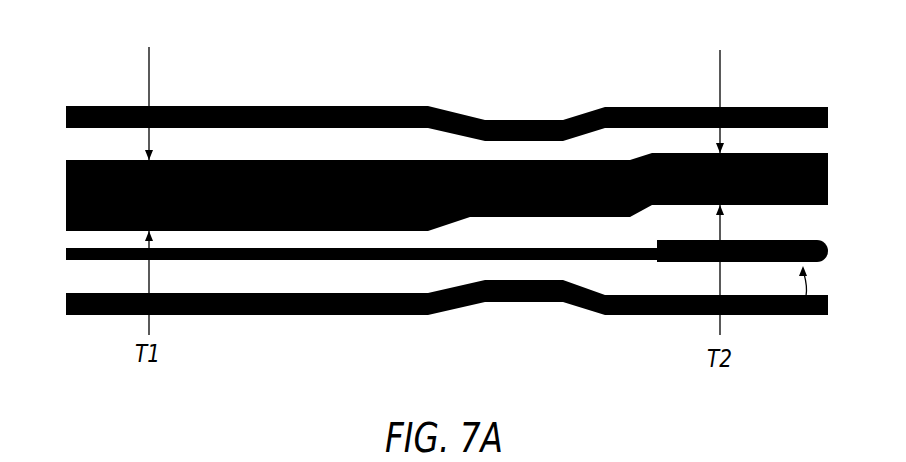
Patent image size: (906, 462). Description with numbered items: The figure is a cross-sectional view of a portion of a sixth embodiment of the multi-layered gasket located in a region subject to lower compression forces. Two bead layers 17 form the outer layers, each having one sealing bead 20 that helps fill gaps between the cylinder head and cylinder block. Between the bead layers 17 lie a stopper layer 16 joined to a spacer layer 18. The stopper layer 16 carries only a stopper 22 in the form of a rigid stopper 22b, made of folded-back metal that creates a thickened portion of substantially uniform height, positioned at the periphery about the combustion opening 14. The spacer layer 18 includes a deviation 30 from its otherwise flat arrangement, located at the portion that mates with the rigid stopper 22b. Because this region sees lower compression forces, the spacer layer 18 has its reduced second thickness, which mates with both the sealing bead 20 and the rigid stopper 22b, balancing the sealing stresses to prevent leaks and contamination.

The combustion opening 14 is at (859, 165).
The stopper layer 16 is at (66, 256).
The bead layer 17 is at (66, 122).
The spacer layer 18 is at (66, 191).
The sealing bead 20 is at (513, 122).
The stopper 22 is at (792, 315).
The rigid stopper 22b is at (828, 250).
The deviation 30 is at (667, 153).